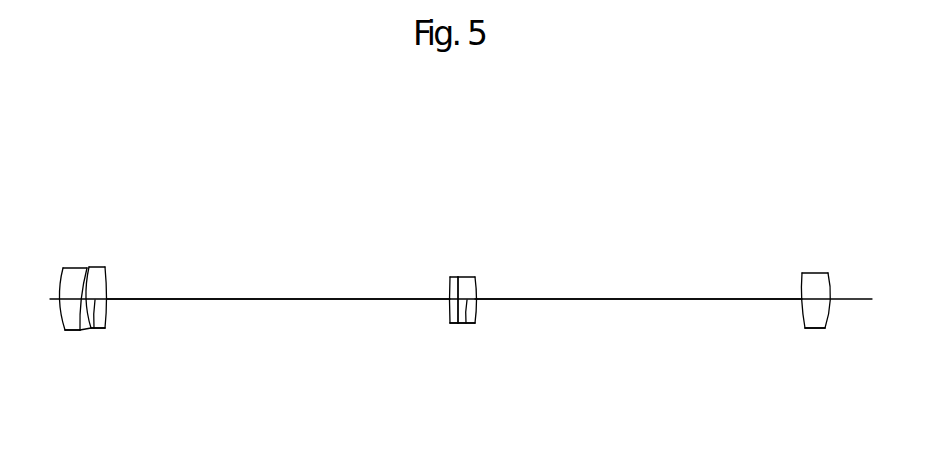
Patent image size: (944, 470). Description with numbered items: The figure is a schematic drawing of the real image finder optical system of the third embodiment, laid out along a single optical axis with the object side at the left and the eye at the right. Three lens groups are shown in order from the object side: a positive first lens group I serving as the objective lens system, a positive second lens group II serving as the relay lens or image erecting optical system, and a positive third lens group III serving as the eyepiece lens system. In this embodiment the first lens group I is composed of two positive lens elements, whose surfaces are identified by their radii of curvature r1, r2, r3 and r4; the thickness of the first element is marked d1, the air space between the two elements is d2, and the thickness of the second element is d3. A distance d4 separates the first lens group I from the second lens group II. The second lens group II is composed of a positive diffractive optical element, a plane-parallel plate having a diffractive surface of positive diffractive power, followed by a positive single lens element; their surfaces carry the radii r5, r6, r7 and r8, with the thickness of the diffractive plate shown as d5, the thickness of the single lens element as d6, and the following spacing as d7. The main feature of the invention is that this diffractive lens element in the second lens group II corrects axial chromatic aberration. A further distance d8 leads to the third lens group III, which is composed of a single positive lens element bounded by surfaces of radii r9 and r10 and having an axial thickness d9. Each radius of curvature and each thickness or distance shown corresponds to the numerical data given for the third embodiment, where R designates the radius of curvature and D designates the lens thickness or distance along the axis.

The first lens group I is at (167, 158).
The second lens group II is at (567, 165).
The third lens group III is at (872, 167).
The radius of curvature of first lens surface r1 is at (63, 268).
The radius of curvature of second lens surface r2 is at (86, 268).
The radius of curvature of third lens surface r3 is at (89, 267).
The radius of curvature of fourth lens surface r4 is at (105, 267).
The radius of curvature of fifth lens surface r5 is at (450, 277).
The radius of curvature of sixth lens surface r6 is at (458, 277).
The radius of curvature of seventh lens surface r7 is at (459, 277).
The radius of curvature of eighth lens surface r8 is at (475, 277).
The radius of curvature of ninth lens surface r9 is at (802, 273).
The radius of curvature of tenth lens surface r10 is at (828, 273).
The thickness of first lens element d1 is at (70, 330).
The distance between first and second lens elements d2 is at (83, 330).
The thickness of second lens element d3 is at (100, 328).
The distance between first and second lens groups d4 is at (280, 299).
The thickness of diffractive optical element d5 is at (451, 323).
The thickness of positive single lens element of second lens group d6 is at (462, 323).
The distance between second lens group and third lens group d7 is at (470, 323).
The distance before third lens group d8 is at (643, 299).
The thickness of third lens group lens element d9 is at (817, 300).